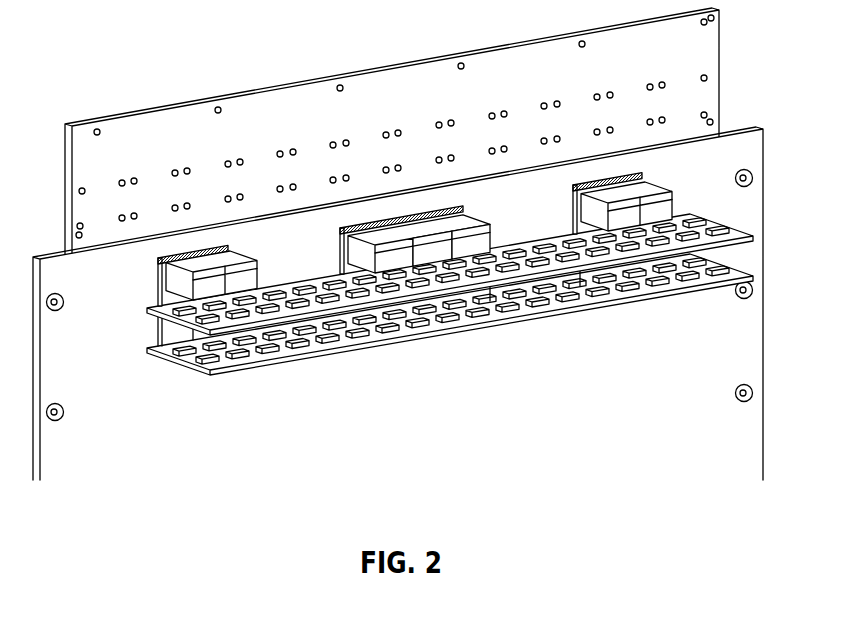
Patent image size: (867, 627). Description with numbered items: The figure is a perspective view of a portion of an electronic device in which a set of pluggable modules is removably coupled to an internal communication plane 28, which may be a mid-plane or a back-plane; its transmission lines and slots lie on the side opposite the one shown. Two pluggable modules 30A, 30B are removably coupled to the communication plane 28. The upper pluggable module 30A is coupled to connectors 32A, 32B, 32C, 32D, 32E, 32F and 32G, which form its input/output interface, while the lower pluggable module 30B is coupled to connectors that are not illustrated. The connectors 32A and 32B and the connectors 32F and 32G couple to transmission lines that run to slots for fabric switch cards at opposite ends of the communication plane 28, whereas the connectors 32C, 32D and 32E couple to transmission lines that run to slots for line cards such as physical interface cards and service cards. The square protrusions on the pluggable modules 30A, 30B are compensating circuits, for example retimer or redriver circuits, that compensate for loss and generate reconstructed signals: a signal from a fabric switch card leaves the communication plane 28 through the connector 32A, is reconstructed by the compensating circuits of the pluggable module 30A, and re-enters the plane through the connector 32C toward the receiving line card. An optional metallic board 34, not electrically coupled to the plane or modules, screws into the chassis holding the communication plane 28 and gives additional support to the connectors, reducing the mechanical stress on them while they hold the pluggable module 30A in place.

The communication plane 28 is at (705, 54).
The board 34 is at (753, 154).
The pluggable module 30A is at (748, 235).
The pluggable module 30B is at (748, 275).
The connector 32A is at (158, 276).
The connector 32B is at (229, 251).
The connector 32C is at (352, 226).
The connector 32D is at (400, 217).
The connector 32E is at (455, 207).
The connector 32F is at (572, 190).
The connector 32G is at (645, 183).